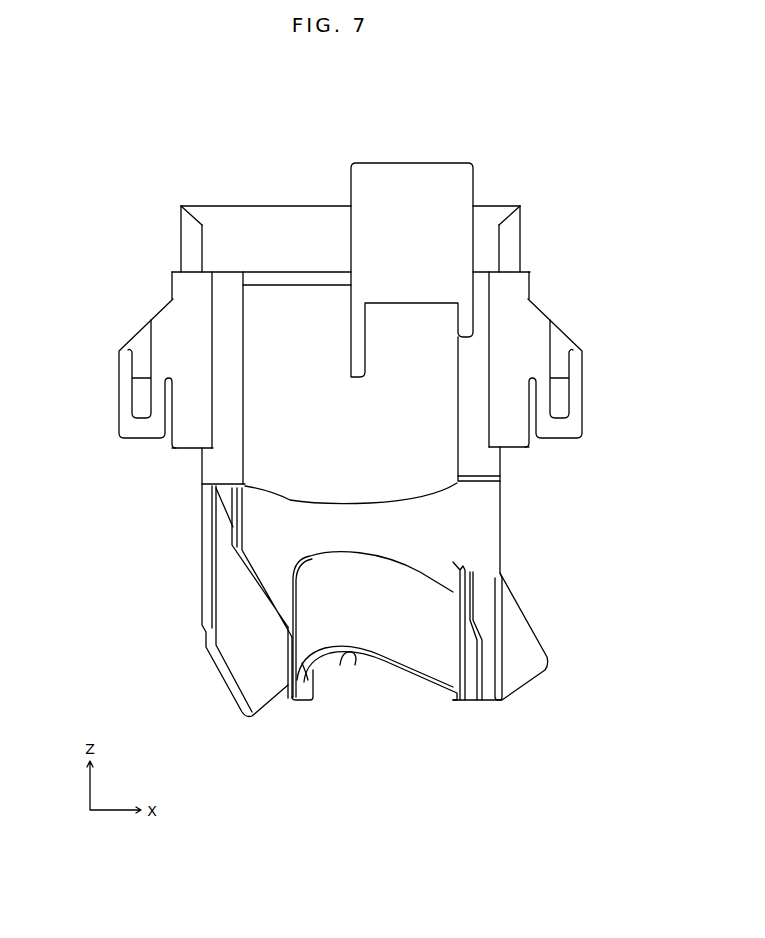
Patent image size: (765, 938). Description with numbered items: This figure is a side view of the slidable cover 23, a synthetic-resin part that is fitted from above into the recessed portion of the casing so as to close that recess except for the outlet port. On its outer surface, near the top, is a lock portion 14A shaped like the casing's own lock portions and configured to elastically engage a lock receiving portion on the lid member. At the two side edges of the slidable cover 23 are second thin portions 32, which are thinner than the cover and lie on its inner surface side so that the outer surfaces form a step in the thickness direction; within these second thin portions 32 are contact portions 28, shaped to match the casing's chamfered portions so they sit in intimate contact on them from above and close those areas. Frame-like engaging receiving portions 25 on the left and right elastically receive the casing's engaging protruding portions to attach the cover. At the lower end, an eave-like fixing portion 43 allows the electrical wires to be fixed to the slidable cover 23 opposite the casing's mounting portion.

The lock portion 14A is at (413, 226).
The slidable cover 23 is at (423, 433).
The engaging receiving portion 25 is at (123, 393).
The contact portion 28 is at (193, 210).
The second thin portion 32 is at (191, 242).
The fixing portion 43 is at (370, 612).